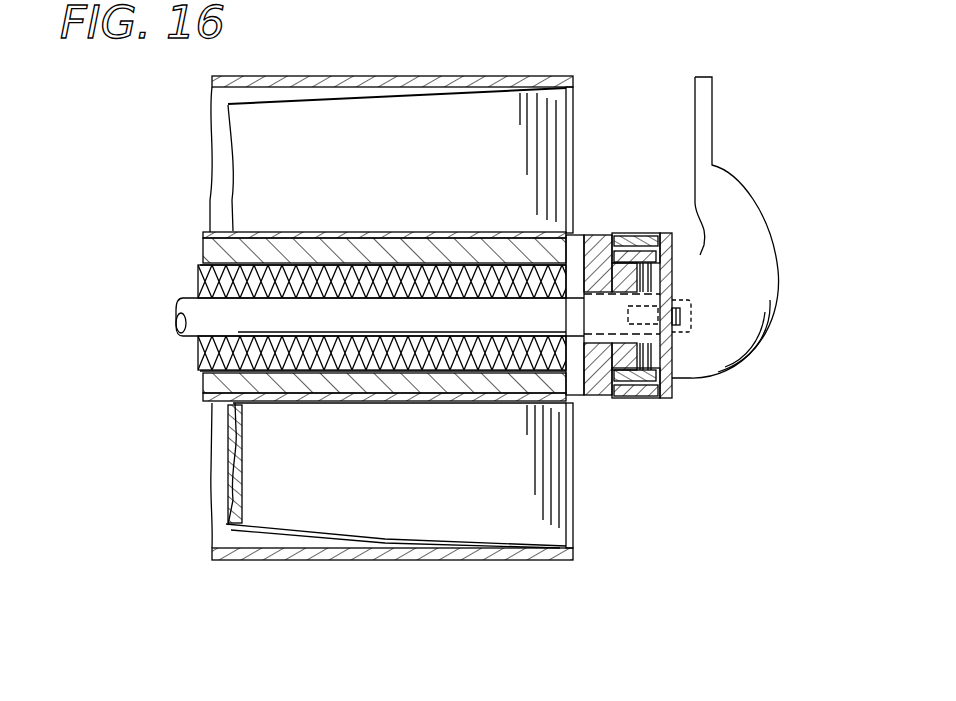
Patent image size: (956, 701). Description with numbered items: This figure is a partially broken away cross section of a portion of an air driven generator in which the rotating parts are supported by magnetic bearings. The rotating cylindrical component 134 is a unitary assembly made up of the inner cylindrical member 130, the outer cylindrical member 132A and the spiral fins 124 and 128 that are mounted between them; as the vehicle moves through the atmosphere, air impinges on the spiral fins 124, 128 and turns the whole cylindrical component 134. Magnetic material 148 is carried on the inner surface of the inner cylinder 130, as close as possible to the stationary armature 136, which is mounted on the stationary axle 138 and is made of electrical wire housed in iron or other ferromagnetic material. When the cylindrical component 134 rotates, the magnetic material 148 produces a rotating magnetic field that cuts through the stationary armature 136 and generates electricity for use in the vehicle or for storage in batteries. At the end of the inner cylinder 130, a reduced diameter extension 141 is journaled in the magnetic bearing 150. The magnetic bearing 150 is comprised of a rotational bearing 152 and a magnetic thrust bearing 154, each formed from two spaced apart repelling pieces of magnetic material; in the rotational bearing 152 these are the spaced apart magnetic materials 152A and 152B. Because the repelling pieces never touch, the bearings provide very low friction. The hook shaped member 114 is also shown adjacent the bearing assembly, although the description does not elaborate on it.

The hook member 114 is at (750, 187).
The spiral fin 124 is at (313, 100).
The spiral fin 128 is at (383, 540).
The inner cylindrical member 130 is at (437, 404).
The outer cylindrical member 132A is at (478, 78).
The cylindrical component 134 is at (215, 454).
The stationary armature 136 is at (196, 357).
The stationary axle 138 is at (180, 305).
The reduced diameter extension 141 is at (618, 403).
The magnetic material 148 is at (200, 383).
The magnetic bearings 150 is at (655, 402).
The rotational bearing 152 is at (719, 210).
The magnetic material 152A is at (672, 250).
The magnetic material 152B is at (672, 268).
The magnetic thrust bearing 154 is at (678, 380).